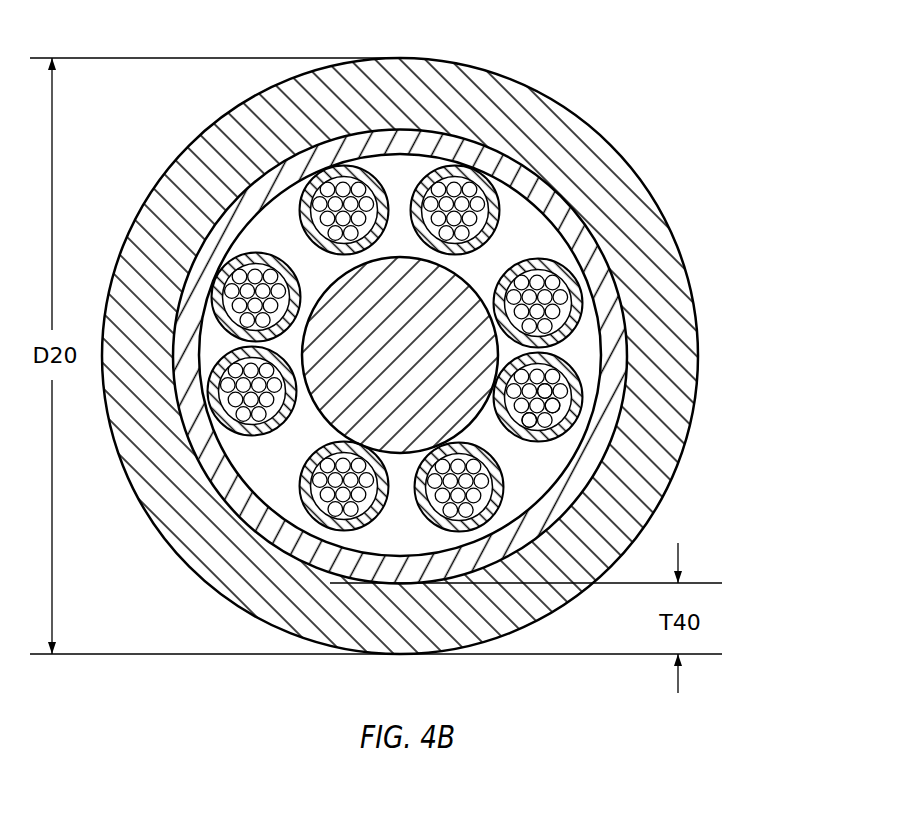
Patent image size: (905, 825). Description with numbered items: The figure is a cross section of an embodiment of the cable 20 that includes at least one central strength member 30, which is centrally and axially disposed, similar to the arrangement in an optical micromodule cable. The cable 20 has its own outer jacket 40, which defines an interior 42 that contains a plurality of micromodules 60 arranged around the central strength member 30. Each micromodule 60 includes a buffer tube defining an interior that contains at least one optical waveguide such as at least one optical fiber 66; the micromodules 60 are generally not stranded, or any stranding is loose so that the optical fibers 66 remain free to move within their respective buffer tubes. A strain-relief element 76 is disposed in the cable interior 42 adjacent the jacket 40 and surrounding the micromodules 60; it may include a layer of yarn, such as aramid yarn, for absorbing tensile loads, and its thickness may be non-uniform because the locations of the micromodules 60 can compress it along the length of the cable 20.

The cable 20 is at (592, 60).
The central strength member 30 is at (397, 270).
The outer jacket 40 is at (556, 132).
The interior 42 is at (258, 243).
The micromodule 60 is at (505, 228).
The optical fiber 66 is at (531, 420).
The strain-relief element 76 is at (580, 234).